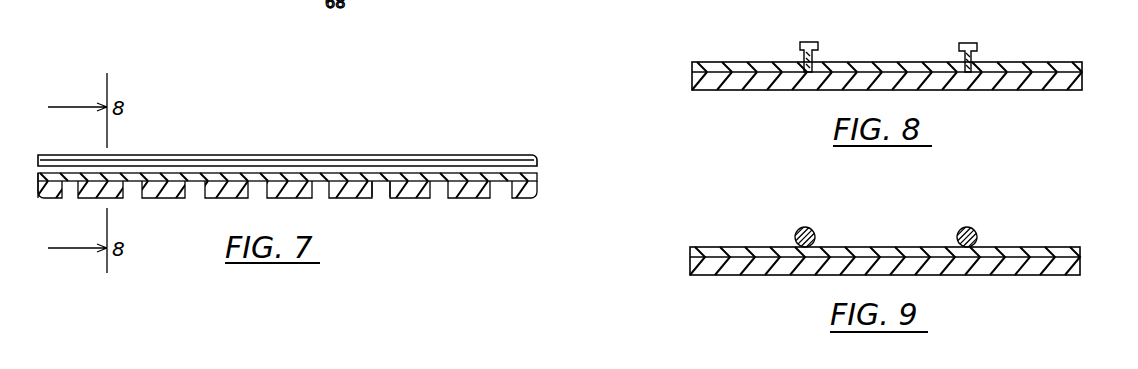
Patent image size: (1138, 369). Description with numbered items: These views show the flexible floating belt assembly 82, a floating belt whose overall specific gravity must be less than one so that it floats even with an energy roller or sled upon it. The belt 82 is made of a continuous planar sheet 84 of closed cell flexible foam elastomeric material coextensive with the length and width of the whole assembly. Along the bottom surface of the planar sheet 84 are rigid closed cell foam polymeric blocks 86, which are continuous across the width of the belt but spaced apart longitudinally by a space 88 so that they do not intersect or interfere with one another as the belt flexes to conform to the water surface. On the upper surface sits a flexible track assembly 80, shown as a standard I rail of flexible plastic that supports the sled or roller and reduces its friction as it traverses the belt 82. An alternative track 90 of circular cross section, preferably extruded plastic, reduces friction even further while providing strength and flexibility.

In FIG. 7, the flexible track assembly 80 is at (453, 155).
In FIG. 8, the flexible track assembly 80 is at (977, 45).
In FIG. 7, the flexible floating belt 82 is at (554, 167).
In FIG. 8, the flexible floating belt 82 is at (1064, 27).
In FIG. 9, the flexible floating belt 82 is at (1070, 232).
In FIG. 7, the planar sheet 84 is at (436, 182).
In FIG. 8, the planar sheet 84 is at (1083, 63).
In FIG. 7, the rigid closed cell foam polymeric blocks 86 is at (487, 192).
In FIG. 8, the rigid closed cell foam polymeric blocks 86 is at (1083, 80).
In FIG. 7, the space 88 is at (378, 188).
In FIG. 9, the alternative track 90 is at (975, 231).